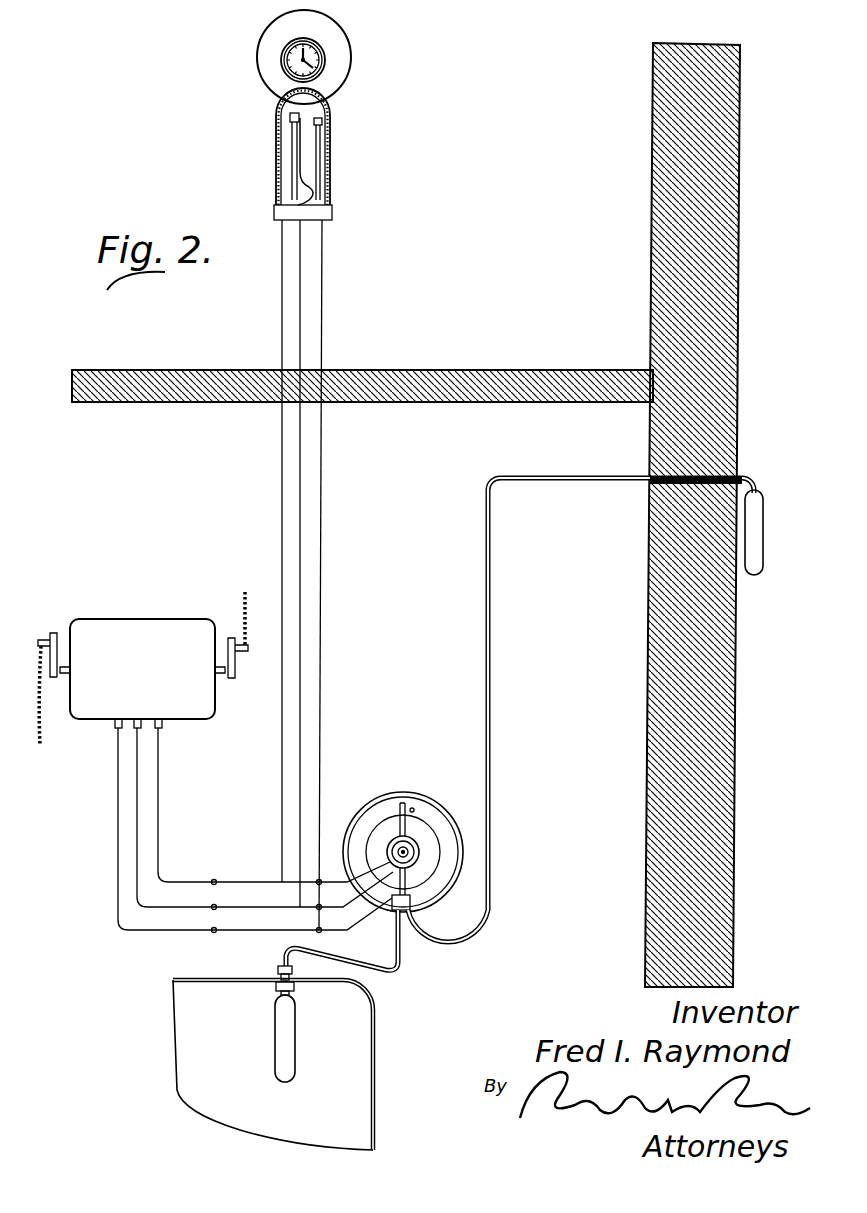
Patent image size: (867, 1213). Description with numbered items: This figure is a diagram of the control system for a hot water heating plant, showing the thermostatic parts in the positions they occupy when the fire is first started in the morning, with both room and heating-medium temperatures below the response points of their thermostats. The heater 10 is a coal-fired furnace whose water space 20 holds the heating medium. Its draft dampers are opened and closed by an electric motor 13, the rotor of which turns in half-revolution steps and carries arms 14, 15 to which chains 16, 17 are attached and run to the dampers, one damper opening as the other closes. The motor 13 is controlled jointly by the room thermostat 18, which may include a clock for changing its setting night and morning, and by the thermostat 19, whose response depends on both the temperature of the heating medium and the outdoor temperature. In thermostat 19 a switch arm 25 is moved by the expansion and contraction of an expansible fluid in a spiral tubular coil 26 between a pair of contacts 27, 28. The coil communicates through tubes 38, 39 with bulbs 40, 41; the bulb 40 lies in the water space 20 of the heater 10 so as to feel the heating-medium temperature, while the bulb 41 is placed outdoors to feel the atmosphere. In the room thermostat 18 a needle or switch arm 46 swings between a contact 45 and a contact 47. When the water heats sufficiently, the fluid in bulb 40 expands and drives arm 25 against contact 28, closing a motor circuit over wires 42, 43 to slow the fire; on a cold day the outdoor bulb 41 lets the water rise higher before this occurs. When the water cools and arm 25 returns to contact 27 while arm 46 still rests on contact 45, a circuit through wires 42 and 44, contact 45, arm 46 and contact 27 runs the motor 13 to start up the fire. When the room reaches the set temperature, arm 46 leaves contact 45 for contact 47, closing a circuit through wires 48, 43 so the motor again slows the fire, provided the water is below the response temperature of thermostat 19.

The heater 10 is at (376, 1141).
The electric motor 13 is at (113, 619).
The arm 14 is at (57, 650).
The arm 15 is at (236, 660).
The chain 16 is at (45, 733).
The chain 17 is at (248, 638).
The room thermostat 18 is at (333, 160).
The thermostat 19 is at (302, 302).
The water space 20 is at (355, 1021).
The switch arm 25 is at (373, 820).
The spiral tubular coil 26 is at (414, 842).
The contact 27 is at (401, 805).
The contact 28 is at (413, 809).
The tube 38 is at (381, 971).
The tube 39 is at (610, 477).
The bulb 40 is at (290, 1045).
The bulb 41 is at (758, 549).
The wire 42 is at (265, 819).
The wire 43 is at (158, 931).
The wire 44 is at (187, 881).
The contact 45 is at (290, 118).
The switch arm 46 is at (300, 160).
The contact 47 is at (322, 122).
The wire 48 is at (323, 326).